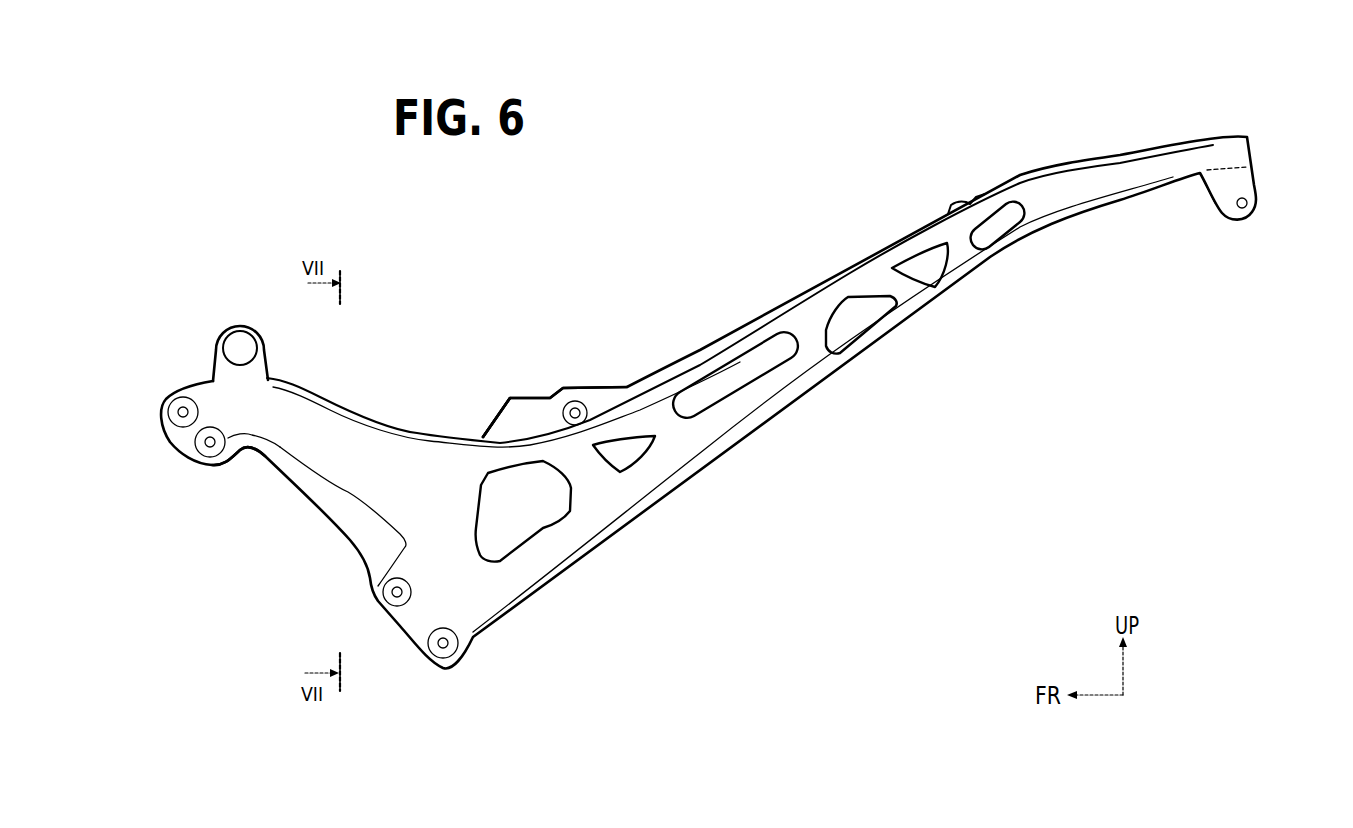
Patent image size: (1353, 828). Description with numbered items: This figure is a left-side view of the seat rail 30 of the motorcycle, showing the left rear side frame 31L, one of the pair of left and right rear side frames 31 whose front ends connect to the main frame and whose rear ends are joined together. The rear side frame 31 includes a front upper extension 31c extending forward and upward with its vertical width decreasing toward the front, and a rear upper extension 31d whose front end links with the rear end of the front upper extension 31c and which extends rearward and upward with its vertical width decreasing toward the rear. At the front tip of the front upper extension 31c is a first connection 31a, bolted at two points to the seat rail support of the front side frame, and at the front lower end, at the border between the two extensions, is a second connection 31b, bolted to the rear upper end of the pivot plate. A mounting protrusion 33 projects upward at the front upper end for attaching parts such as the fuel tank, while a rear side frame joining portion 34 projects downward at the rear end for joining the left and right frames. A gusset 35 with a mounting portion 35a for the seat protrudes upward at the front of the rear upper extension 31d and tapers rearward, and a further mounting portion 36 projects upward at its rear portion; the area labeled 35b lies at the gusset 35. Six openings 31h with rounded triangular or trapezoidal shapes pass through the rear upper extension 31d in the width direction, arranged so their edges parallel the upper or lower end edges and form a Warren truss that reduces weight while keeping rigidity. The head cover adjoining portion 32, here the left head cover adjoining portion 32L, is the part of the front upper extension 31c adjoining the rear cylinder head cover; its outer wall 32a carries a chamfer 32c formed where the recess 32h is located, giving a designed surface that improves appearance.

The seat rail 30 is at (1071, 106).
The rear side frames 31 is at (717, 438).
The left rear side frame 31L is at (688, 447).
The first connection 31a is at (188, 432).
The second connection 31b is at (418, 630).
The front upper extension 31c is at (293, 417).
The rear upper extension 31d is at (807, 363).
The openings 31h is at (632, 463).
The head cover adjoining portions 32 is at (334, 427).
The left head cover adjoining portion 32L is at (363, 457).
The outer wall 32a is at (342, 470).
The chamfer 32c is at (352, 520).
The recess 32h is at (255, 453).
The mounting protrusion 33 is at (227, 337).
The rear side frame joining portion 34 is at (1240, 183).
The gusset 35 is at (603, 397).
The mounting portion 35a is at (568, 407).
The boss foot 35b is at (490, 423).
The mounting portion 36 is at (960, 203).